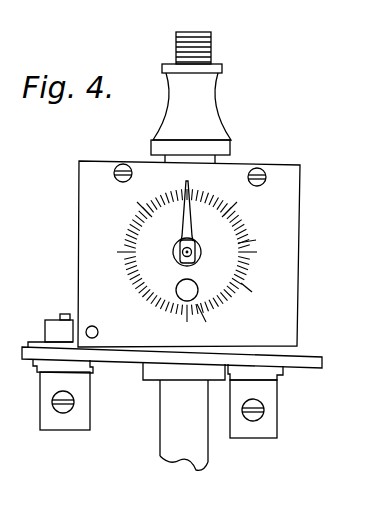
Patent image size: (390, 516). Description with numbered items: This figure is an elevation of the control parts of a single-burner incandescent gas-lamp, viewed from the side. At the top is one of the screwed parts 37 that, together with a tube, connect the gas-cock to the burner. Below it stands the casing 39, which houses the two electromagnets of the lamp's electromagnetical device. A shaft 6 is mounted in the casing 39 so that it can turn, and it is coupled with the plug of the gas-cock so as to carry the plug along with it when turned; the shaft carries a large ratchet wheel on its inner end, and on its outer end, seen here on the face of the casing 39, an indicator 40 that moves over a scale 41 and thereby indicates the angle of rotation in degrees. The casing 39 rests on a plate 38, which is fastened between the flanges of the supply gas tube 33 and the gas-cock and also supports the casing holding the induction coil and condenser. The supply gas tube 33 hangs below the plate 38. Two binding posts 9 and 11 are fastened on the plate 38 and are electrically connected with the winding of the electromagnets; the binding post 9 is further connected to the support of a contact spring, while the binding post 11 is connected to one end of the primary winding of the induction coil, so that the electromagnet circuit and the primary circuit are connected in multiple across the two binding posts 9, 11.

The screwed part 37 is at (191, 98).
The casing 39 is at (300, 247).
The scale 41 is at (242, 222).
The indicator 40 is at (189, 218).
The shaft 6 is at (201, 249).
The plate 38 is at (322, 361).
The binding post 11 is at (50, 403).
The supply gas tube 33 is at (184, 416).
The binding post 9 is at (278, 420).